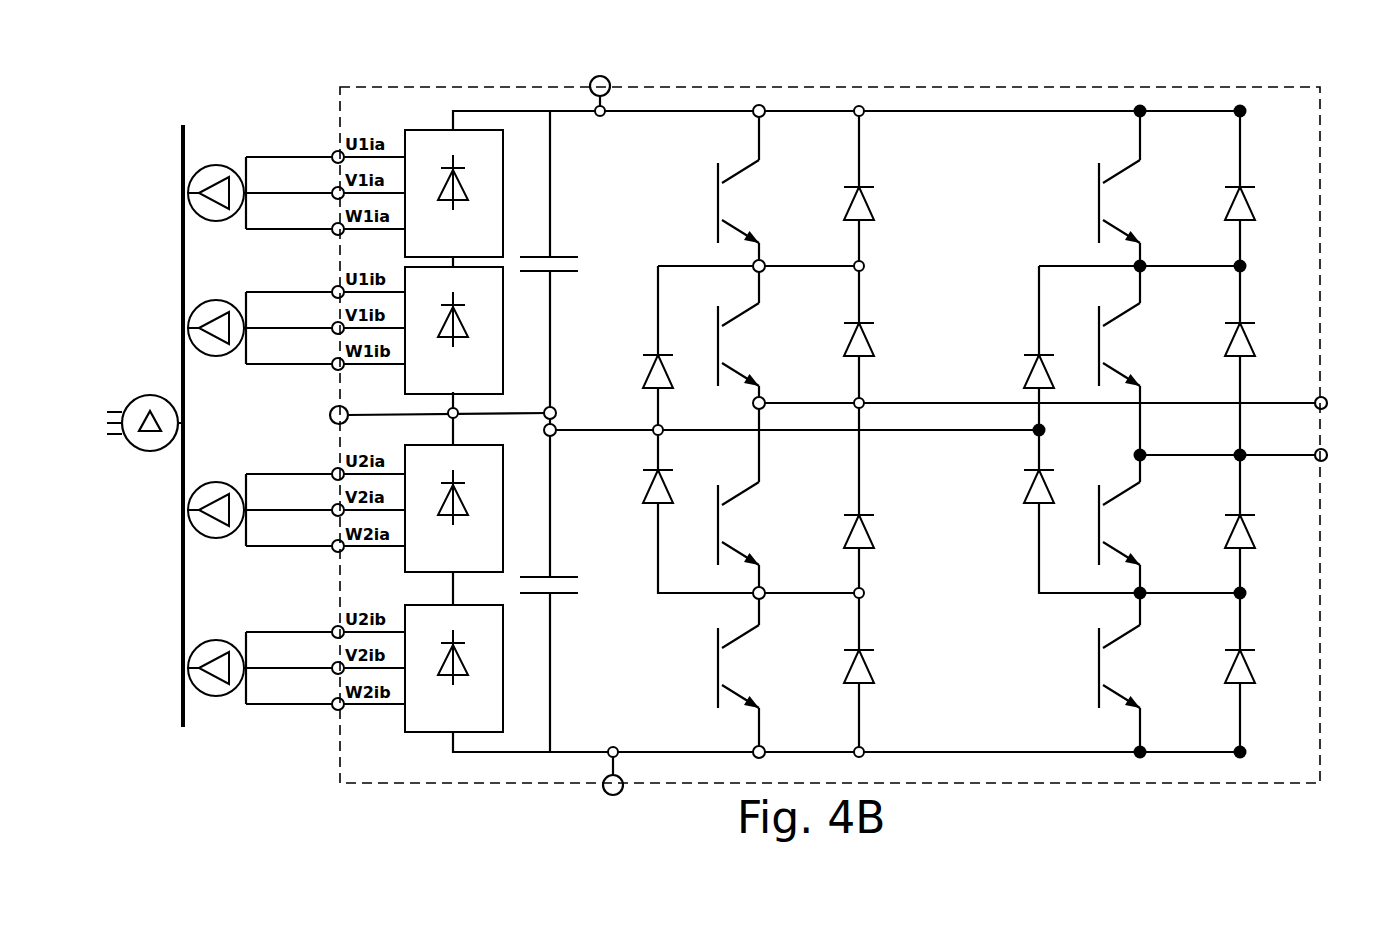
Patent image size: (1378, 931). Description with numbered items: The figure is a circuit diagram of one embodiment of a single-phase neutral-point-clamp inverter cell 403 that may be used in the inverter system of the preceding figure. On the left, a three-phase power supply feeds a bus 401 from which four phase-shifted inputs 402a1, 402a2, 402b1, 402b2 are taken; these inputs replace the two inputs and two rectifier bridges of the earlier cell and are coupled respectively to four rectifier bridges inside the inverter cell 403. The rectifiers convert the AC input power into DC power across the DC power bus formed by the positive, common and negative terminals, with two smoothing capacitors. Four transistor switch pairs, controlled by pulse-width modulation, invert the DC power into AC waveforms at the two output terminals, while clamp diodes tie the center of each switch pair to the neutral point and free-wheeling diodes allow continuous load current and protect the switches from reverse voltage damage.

The three-phase power supply bus 401 is at (183, 112).
The input 402a1 is at (214, 230).
The input 402a2 is at (214, 366).
The input 402b1 is at (214, 548).
The input 402b2 is at (214, 706).
The inverter cell 403 is at (356, 76).